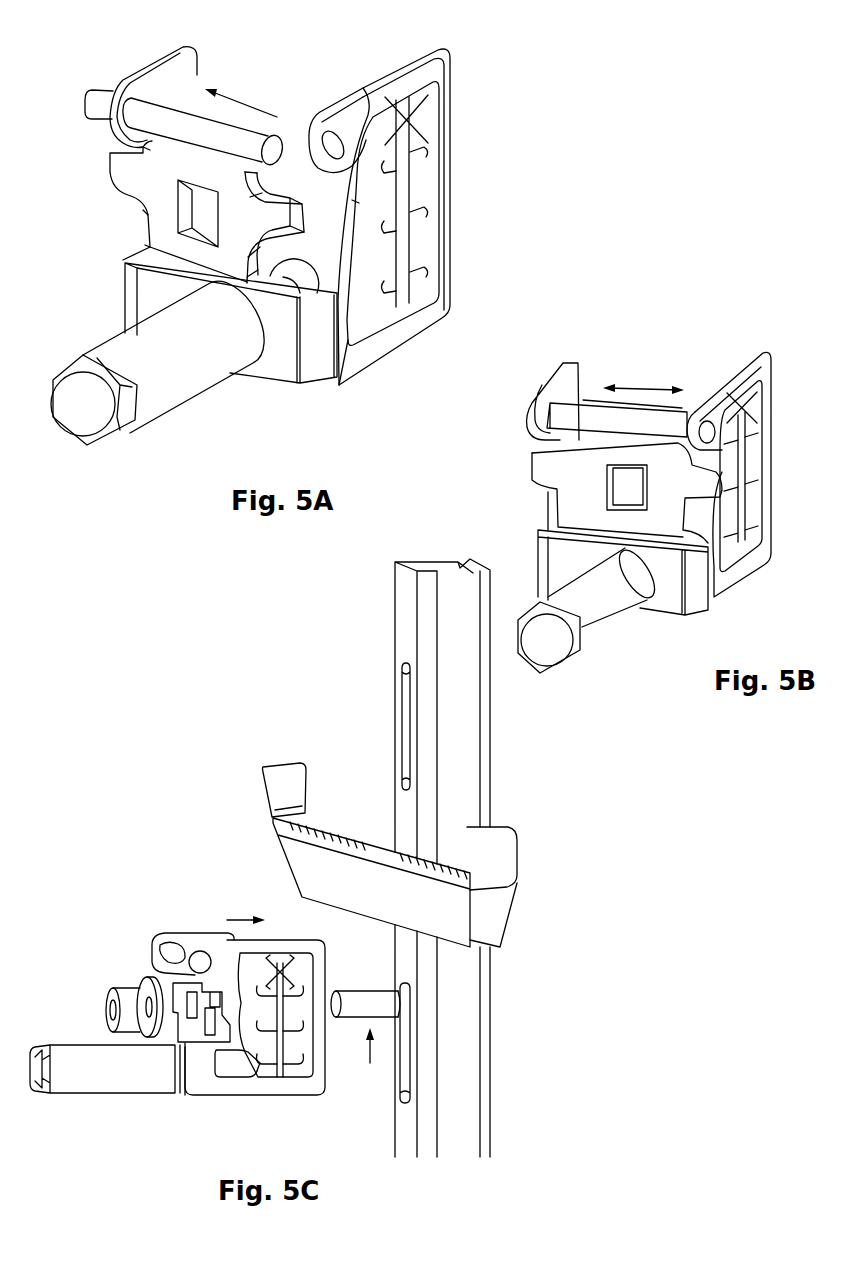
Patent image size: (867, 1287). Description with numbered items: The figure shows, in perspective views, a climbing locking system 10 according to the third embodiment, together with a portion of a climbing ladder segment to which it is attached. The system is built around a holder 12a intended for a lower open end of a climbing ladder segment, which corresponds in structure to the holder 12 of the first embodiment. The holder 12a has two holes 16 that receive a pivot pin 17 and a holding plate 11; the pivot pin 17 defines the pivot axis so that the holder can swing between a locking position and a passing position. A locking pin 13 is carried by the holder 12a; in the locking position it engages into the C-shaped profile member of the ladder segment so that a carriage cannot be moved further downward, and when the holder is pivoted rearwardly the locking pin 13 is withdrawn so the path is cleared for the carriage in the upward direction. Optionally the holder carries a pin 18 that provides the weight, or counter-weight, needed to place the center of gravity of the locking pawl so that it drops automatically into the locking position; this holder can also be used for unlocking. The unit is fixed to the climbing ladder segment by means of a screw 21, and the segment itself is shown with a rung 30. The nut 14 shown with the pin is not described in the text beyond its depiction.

In FIG. 5C, the climbing locking system 10 is at (407, 628).
In FIG. 5A, the holding plate 11 is at (98, 159).
In FIG. 5B, the holding plate 11 is at (540, 466).
In FIG. 5A, the holder 12 is at (117, 263).
In FIG. 5A, the holder 12a is at (313, 380).
In FIG. 5B, the holder 12a is at (753, 563).
In FIG. 5C, the holder 12a is at (292, 1087).
In FIG. 5A, the locking pin 13 is at (300, 377).
In FIG. 5C, the nut 14 is at (99, 1013).
In FIG. 5A, the holes 16 is at (365, 90).
In FIG. 5A, the pivot pin 17 is at (172, 117).
In FIG. 5B, the pivot pin 17 is at (592, 402).
In FIG. 5A, the pin 18 is at (167, 390).
In FIG. 5B, the pin 18 is at (620, 663).
In FIG. 5C, the pin 18 is at (77, 1080).
In FIG. 5C, the screw 21 is at (366, 977).
In FIG. 5C, the rung 30 is at (340, 821).